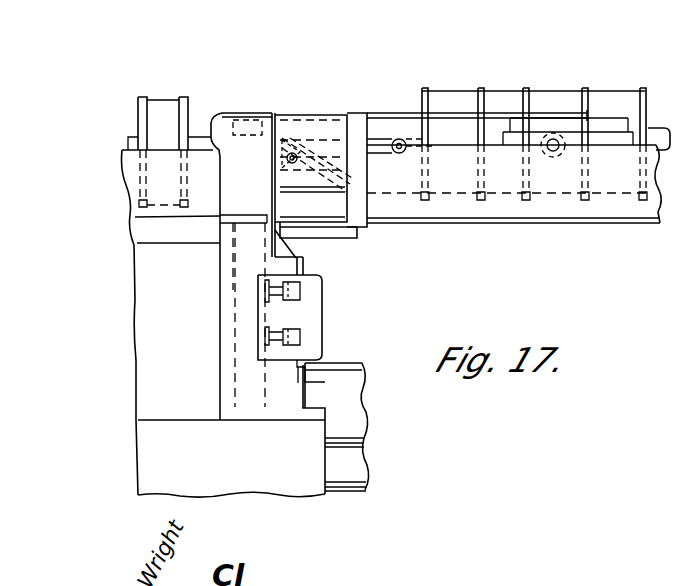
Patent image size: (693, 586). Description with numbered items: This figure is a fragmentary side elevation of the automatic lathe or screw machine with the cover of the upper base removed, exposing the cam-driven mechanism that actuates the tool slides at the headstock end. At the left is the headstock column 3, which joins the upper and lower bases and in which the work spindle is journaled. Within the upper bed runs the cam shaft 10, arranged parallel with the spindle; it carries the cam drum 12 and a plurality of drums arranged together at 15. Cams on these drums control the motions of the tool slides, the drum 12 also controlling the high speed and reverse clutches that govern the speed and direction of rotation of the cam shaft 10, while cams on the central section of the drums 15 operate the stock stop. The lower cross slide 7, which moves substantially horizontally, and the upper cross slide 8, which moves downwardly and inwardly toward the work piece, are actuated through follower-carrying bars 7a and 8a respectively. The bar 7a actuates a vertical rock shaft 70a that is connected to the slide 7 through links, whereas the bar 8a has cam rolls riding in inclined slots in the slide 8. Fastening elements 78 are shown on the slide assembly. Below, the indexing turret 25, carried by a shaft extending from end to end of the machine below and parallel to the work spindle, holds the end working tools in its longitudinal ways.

The headstock column 3 is at (147, 367).
The cam drum 12 is at (163, 103).
The cam shaft 10 is at (196, 138).
The upper cross slide 8 is at (322, 123).
The follower-carrying bar 8a is at (378, 140).
The follower-carrying bar 7a is at (442, 115).
The cam drums 15 is at (502, 93).
The lower cross slide 7 is at (322, 307).
The bolts 78 is at (285, 303).
The vertical rock shaft 70a is at (232, 290).
The indexing turret 25 is at (348, 375).